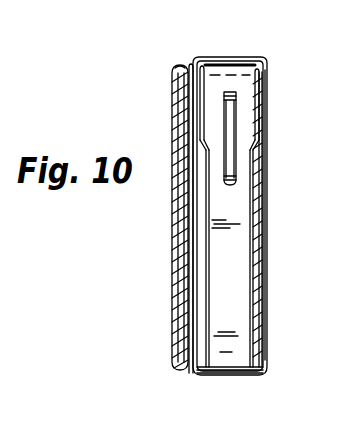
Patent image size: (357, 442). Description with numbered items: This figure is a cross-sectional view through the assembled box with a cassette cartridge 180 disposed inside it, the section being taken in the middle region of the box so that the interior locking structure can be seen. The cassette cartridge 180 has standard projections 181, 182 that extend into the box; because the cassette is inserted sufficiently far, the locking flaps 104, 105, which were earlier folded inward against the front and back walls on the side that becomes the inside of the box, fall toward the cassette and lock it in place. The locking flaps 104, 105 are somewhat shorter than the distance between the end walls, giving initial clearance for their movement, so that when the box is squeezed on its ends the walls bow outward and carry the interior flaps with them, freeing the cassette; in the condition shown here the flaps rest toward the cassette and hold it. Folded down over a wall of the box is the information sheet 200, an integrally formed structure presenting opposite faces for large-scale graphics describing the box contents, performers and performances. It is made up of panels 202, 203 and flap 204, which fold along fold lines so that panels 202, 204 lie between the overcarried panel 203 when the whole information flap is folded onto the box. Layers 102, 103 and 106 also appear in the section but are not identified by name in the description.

The information sheet 200 is at (163, 209).
The housing cap 106 is at (223, 57).
The outer wall 102 is at (263, 306).
The standard projection 182 is at (208, 85).
The locking flap 104 is at (207, 230).
The standard projection 181 is at (253, 101).
The locking flap 105 is at (253, 222).
The cassette cartridge 180 is at (228, 209).
The channel 103 is at (190, 265).
The panel 203 is at (175, 320).
The panel 202 is at (180, 352).
The flap 204 is at (186, 131).